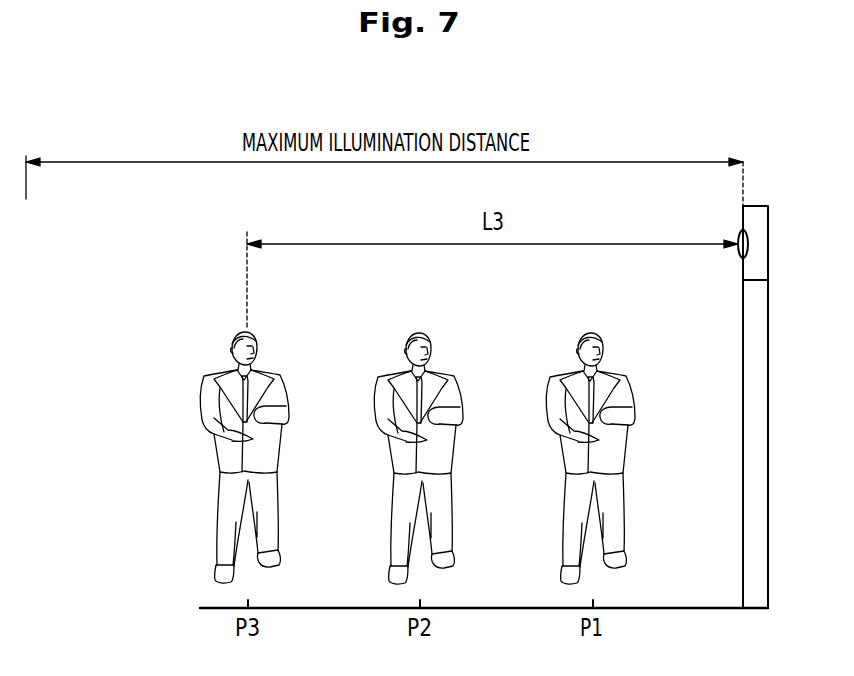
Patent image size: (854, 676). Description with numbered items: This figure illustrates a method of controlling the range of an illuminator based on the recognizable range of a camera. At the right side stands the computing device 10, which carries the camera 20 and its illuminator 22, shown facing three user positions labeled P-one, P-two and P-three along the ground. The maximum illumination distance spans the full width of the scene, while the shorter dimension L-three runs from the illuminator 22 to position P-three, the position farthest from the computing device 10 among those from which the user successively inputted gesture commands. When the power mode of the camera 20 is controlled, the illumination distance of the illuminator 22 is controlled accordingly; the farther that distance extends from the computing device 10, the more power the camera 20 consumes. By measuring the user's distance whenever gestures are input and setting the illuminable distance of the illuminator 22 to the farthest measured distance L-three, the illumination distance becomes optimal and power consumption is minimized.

The computing device 10 is at (760, 443).
The camera 20 is at (762, 223).
The illuminator 22 is at (740, 232).